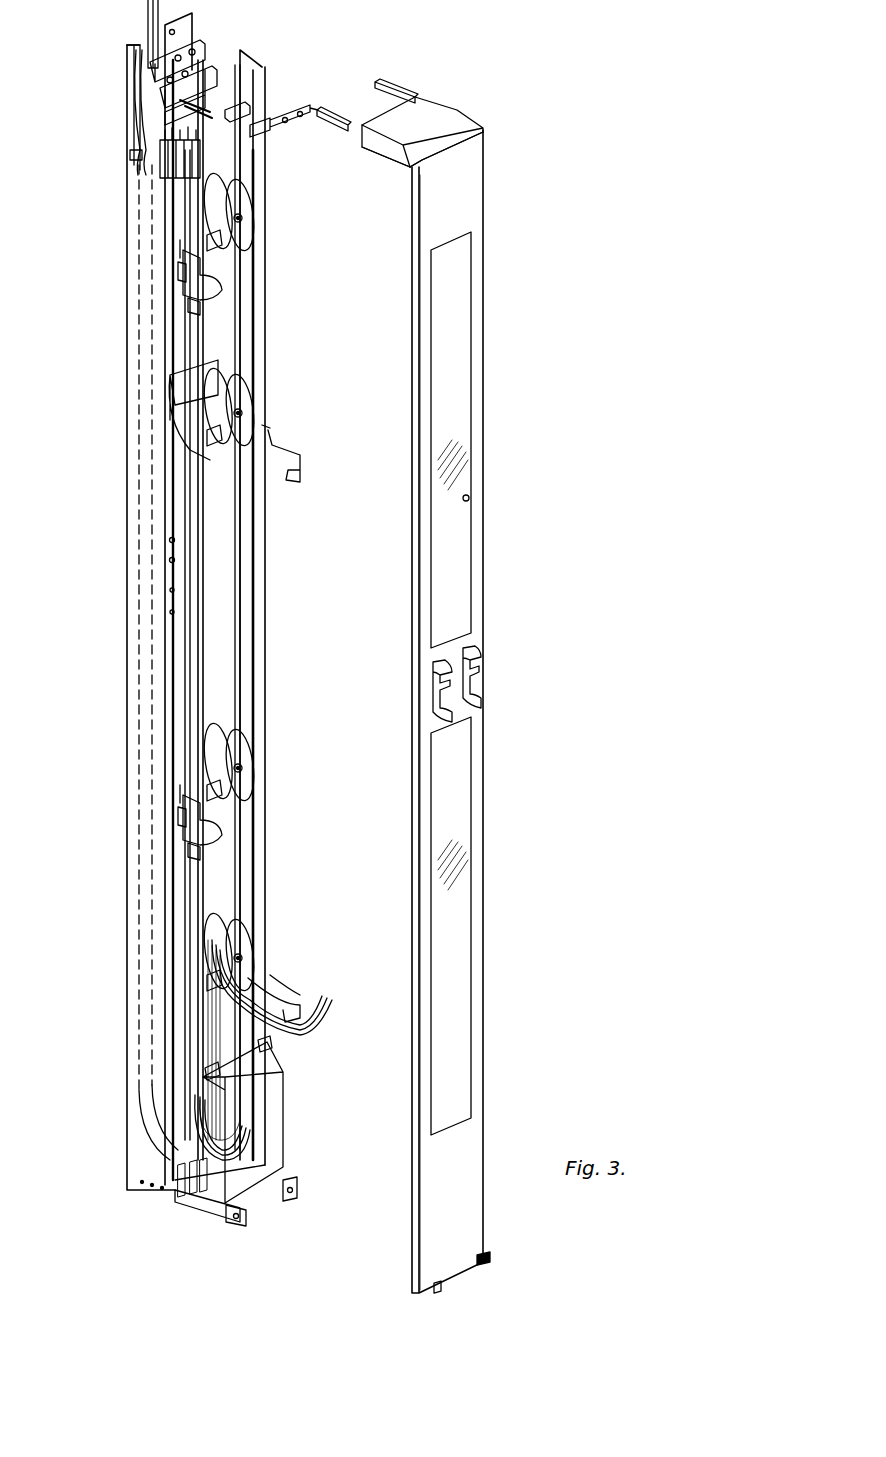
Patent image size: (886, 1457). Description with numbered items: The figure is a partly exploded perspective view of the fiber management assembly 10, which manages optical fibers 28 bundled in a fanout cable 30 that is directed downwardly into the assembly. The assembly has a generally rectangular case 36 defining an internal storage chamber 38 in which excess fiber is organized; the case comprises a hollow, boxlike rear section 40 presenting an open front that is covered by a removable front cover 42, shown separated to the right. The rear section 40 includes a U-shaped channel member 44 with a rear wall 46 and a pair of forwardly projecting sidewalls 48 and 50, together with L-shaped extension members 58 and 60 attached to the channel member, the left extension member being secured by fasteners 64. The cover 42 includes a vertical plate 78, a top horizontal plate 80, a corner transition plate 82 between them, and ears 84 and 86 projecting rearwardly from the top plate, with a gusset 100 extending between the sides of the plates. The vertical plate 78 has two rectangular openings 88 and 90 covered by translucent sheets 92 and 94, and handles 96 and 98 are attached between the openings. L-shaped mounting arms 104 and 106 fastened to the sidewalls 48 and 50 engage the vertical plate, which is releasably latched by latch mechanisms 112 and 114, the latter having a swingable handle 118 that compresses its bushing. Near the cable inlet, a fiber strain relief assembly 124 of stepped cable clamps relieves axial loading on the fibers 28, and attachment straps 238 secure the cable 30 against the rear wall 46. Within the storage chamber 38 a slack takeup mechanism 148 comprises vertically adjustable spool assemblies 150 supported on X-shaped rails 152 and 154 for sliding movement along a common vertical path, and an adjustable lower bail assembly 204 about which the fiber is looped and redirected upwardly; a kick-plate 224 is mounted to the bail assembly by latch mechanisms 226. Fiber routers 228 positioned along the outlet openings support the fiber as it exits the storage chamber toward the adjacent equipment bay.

The fiber management assembly 10 is at (322, 61).
The optical fibers 28 is at (333, 1000).
The cable 30 is at (149, 18).
The case 36 is at (130, 1171).
The storage chamber 38 is at (236, 632).
The rear section 40 is at (136, 1095).
The front cover 42 is at (483, 985).
The channel member 44 is at (192, 14).
The rear wall 46 is at (128, 46).
The left sidewall 48 is at (128, 302).
The right sidewall 50 is at (232, 572).
The left extension member 58 is at (170, 700).
The right extension member 60 is at (253, 266).
The fasteners 64 is at (170, 561).
The vertical plate 78 is at (472, 208).
The top horizontal plate 80 is at (457, 112).
The corner transition plate 82 is at (470, 127).
The ear 84 is at (338, 108).
The ear 86 is at (405, 85).
The rectangular opening 88 is at (468, 499).
The rectangular opening 90 is at (435, 785).
The translucent sheet 92 is at (458, 430).
The translucent sheet 94 is at (464, 848).
The handle 96 is at (440, 692).
The handle 98 is at (478, 663).
The gusset 100 is at (400, 158).
The mounting arm 104 is at (222, 1218).
The mounting arm 106 is at (292, 1178).
The latch mechanism 112 is at (417, 1290).
The latch mechanism 114 is at (482, 1256).
The swingable handle 118 is at (487, 1265).
The fiber strain relief assembly 124 is at (207, 56).
The slack takeup mechanism 148 is at (236, 898).
The spool assemblies 150 is at (242, 190).
The rear rail 152 is at (170, 175).
The front rail 154 is at (177, 1178).
The lower bail assembly 204 is at (212, 1136).
The kick-plate 224 is at (285, 1085).
The latch mechanisms 226 is at (268, 1046).
The fiber routers 228 is at (215, 282).
The attachment straps 238 is at (130, 154).